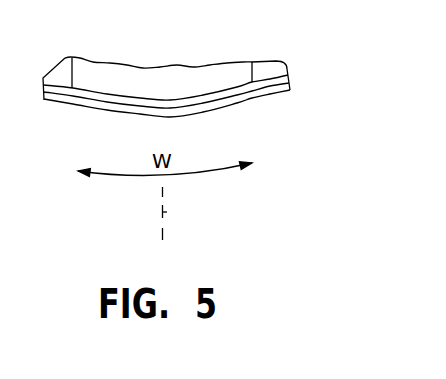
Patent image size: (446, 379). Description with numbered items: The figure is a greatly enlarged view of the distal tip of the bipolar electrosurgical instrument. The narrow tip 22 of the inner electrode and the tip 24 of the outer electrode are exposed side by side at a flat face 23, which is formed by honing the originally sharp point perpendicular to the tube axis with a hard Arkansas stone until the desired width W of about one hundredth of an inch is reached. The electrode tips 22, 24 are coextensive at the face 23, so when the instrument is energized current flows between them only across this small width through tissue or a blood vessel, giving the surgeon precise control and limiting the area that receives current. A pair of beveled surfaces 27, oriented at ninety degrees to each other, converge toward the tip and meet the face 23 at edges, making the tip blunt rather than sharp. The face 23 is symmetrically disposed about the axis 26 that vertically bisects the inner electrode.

The tip of electrode 22 is at (167, 83).
The face 23 is at (130, 90).
The tip of electrode 24 is at (202, 108).
The axis 26 is at (172, 212).
The beveled surfaces 27 is at (58, 76).